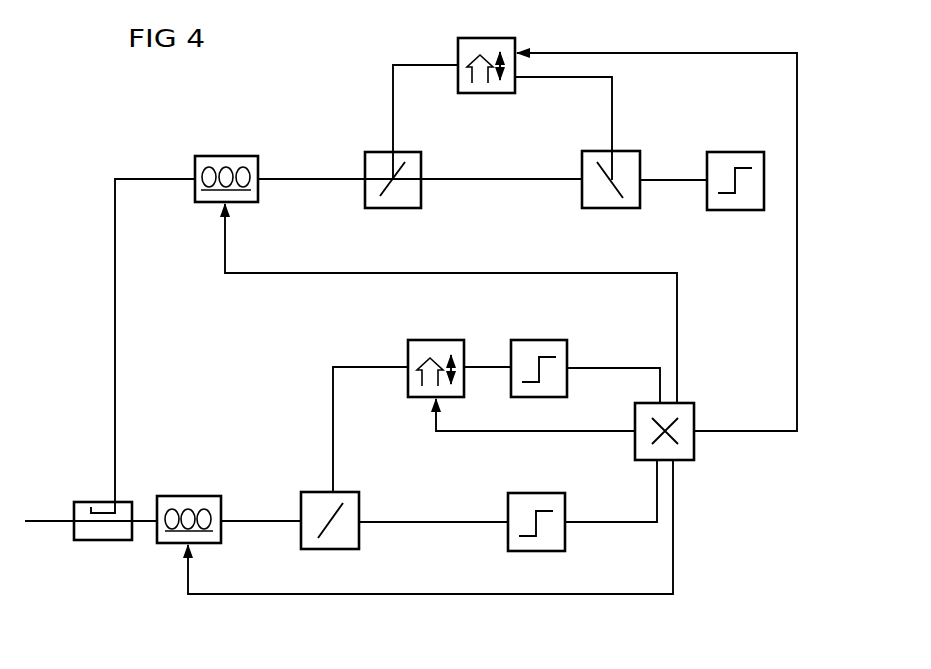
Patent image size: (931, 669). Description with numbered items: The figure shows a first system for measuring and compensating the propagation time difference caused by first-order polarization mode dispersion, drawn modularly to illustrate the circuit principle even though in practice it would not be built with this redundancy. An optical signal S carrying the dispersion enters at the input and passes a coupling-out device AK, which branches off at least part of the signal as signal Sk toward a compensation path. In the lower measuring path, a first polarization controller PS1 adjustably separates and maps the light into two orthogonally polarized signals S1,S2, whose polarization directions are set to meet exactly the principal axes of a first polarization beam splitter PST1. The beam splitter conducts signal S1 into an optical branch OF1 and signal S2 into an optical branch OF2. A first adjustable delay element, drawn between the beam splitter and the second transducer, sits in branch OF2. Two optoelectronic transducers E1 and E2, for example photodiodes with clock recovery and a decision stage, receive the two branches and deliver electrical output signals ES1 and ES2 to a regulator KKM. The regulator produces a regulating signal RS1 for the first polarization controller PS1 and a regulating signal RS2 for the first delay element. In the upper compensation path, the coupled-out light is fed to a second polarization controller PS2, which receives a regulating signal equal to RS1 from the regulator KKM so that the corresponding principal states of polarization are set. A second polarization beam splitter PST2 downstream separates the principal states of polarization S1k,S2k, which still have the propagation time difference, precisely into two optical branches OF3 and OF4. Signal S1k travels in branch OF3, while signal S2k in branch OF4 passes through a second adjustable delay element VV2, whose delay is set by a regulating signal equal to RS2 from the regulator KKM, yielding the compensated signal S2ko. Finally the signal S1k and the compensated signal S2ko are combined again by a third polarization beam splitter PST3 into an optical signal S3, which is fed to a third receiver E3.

The second polarization controller PS2 is at (222, 156).
The optical signal fed to the second polarization controller Sk is at (104, 235).
The principal states of polarization S1k,S2k is at (355, 168).
The second polarization beam splitter PST2 is at (421, 197).
The optical branch OF4 is at (393, 88).
The principal state of polarization S2k is at (447, 52).
The second adjustable delay element VV2 is at (515, 88).
The compensated signal S2ko is at (622, 122).
The third polarization beam splitter PST3 is at (612, 208).
The optical branch OF3 is at (555, 181).
The optical signal S1k is at (492, 169).
The optical signal S3 is at (692, 168).
The third receiver E3 is at (735, 152).
The optical branch OF2 is at (362, 366).
The orthogonally polarized signal S2 is at (322, 392).
The optoelectronic transducer E2 is at (537, 340).
The electrical output signal ES2 is at (618, 356).
The regulating signal RS2 is at (500, 442).
The regulator KKM is at (694, 445).
The optical signal S is at (64, 510).
The coupling-out device AK is at (101, 540).
The first polarization controller PS1 is at (188, 496).
The orthogonally polarized signals S1,S2 is at (297, 530).
The first polarization beam splitter PST1 is at (348, 492).
The orthogonally polarized signal S1 is at (449, 532).
The optical branch OF1 is at (478, 523).
The optoelectronic transducer E1 is at (537, 493).
The electrical output signal ES1 is at (627, 532).
The regulating signal RS1 is at (425, 604).